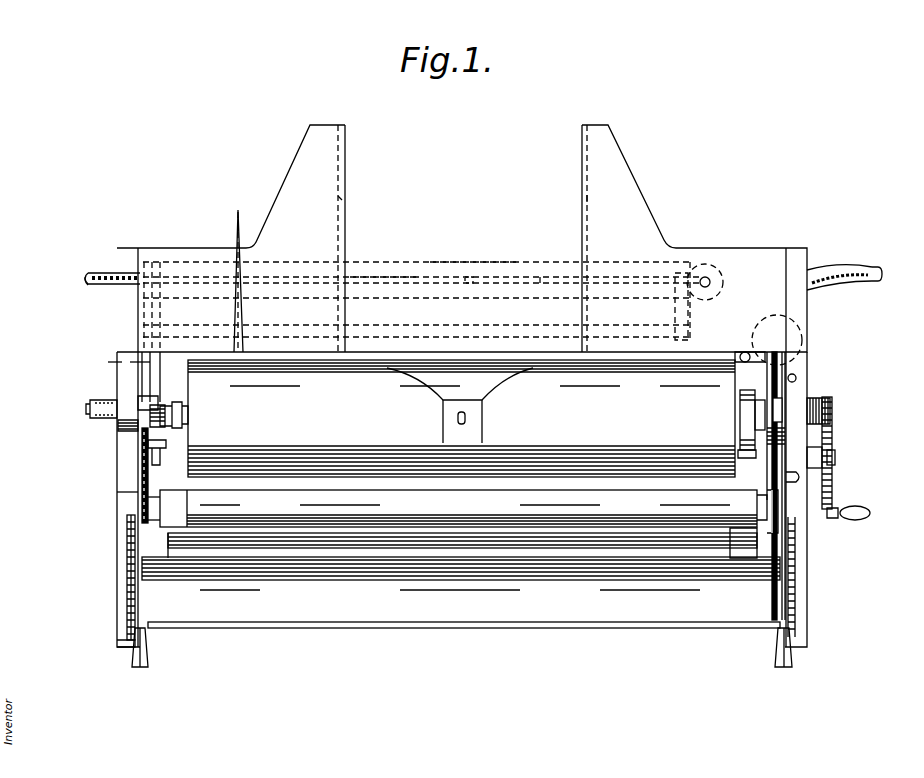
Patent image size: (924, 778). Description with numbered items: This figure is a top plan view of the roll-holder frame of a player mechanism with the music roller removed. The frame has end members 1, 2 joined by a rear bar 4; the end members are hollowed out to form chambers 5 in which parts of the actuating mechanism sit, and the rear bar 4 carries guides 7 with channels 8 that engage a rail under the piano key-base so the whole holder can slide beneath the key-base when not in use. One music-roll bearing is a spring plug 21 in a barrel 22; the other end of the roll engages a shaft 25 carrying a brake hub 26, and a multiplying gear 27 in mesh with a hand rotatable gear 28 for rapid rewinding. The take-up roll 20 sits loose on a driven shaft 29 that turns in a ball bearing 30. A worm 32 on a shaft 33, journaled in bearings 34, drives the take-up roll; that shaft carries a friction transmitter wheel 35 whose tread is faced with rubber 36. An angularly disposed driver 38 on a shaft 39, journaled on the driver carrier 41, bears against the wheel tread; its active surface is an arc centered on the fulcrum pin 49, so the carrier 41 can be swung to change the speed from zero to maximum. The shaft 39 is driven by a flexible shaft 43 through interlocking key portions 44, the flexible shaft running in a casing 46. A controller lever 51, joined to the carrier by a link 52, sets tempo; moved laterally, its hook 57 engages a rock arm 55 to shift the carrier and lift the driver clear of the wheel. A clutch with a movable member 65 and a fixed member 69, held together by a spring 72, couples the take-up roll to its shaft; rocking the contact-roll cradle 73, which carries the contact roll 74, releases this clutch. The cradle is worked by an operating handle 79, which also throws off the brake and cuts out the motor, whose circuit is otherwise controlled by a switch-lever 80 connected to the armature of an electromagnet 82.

The end member 1 is at (117, 478).
The end member 2 is at (807, 365).
The rear bar 4 is at (462, 245).
The chamber 5 is at (470, 628).
The guide 7 is at (333, 173).
The channel 8 is at (345, 202).
The take-up roll 20 is at (461, 418).
The spring plug 21 is at (150, 410).
The barrel 22 is at (105, 398).
The shaft 25 is at (812, 400).
The brake hub 26 is at (773, 405).
The multiplying gear 27 is at (832, 420).
The hand rotatable gear 28 is at (832, 484).
The driven shaft 29 is at (186, 406).
The ball bearing 30 is at (797, 482).
The worm 32 is at (160, 425).
The shaft 33 is at (116, 361).
The bearing 34 is at (160, 455).
The friction transmitter wheel 35 is at (92, 272).
The rubber facing 36 is at (86, 281).
The driver 38 is at (238, 210).
The shaft 39 is at (358, 277).
The driver carrier 41 is at (475, 262).
The flexible shaft 43 is at (876, 281).
The interlocking key portions 44 is at (467, 283).
The casing 46 is at (848, 282).
The fulcrum pin 49 is at (708, 280).
The controller lever 51 is at (148, 657).
The link 52 is at (127, 555).
The rock arm 55 is at (127, 608).
The hook 57 is at (117, 645).
The movable clutch member 65 is at (746, 458).
The fixed clutch member 69 is at (740, 410).
The spring 72 is at (740, 438).
The contact-roll cradle 73 is at (768, 530).
The contact roll 74 is at (452, 508).
The operating handle 79 is at (775, 655).
The switch-lever 80 is at (767, 511).
The electromagnet 82 is at (738, 362).